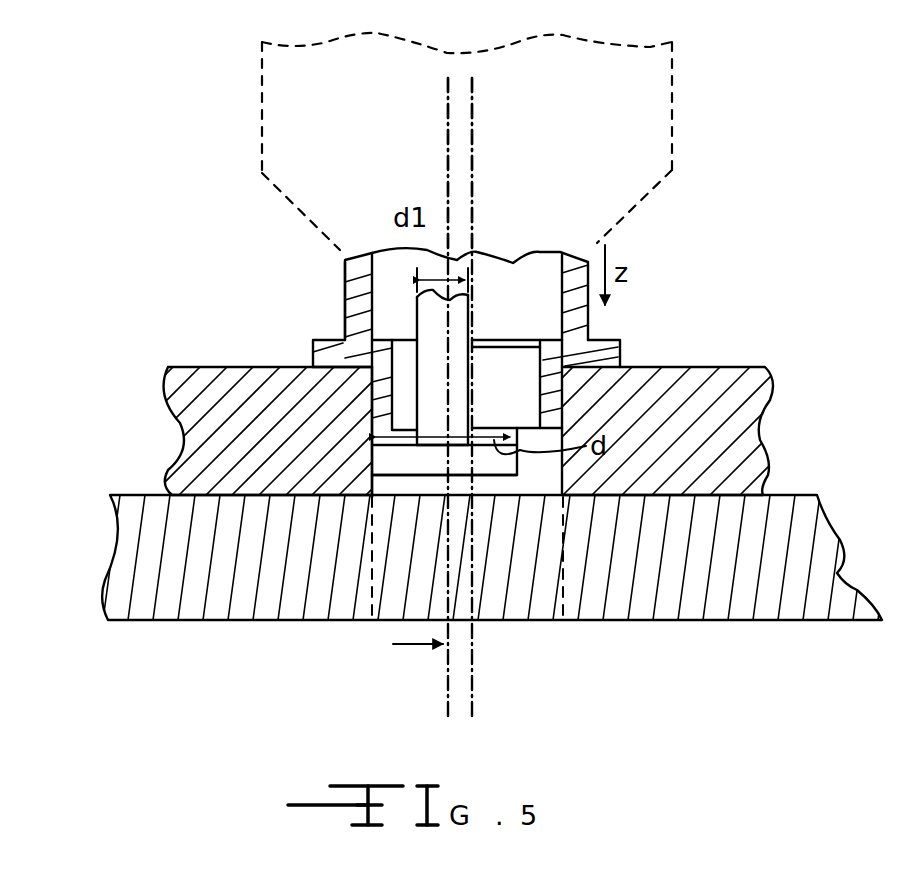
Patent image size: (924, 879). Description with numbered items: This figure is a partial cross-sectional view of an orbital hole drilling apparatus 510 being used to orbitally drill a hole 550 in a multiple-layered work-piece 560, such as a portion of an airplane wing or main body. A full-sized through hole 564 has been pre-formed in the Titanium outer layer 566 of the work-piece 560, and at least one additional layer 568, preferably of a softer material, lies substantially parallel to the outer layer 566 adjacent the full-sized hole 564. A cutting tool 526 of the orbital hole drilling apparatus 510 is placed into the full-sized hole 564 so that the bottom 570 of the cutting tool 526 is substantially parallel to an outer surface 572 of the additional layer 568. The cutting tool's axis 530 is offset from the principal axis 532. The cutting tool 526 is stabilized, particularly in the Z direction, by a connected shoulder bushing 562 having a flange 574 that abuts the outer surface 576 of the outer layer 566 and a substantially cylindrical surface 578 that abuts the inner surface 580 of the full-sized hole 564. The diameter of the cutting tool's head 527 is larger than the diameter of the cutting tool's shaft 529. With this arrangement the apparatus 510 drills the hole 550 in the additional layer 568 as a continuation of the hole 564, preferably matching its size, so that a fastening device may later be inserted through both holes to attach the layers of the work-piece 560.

The orbital hole drilling apparatus 510 is at (578, 160).
The principal axis 532 is at (472, 160).
The cutting tool's axis 530 is at (447, 210).
The shoulder bushing 562 is at (343, 290).
The cutting tool's shaft 529 is at (343, 315).
The flange 574 is at (332, 343).
The outer surface 576 is at (315, 357).
The substantially cylindrical surface 578 is at (390, 400).
The inner surface 580 is at (372, 440).
The cutting tool 526 is at (377, 467).
The bottom 570 is at (417, 478).
The outer surface 572 is at (417, 488).
The cutting tool's head 527 is at (433, 462).
The outer layer 566 is at (207, 400).
The full-sized through hole 564 is at (550, 468).
The additional layer 568 is at (765, 580).
The hole 550 is at (517, 558).
The multiple-layered work-piece 560 is at (823, 477).